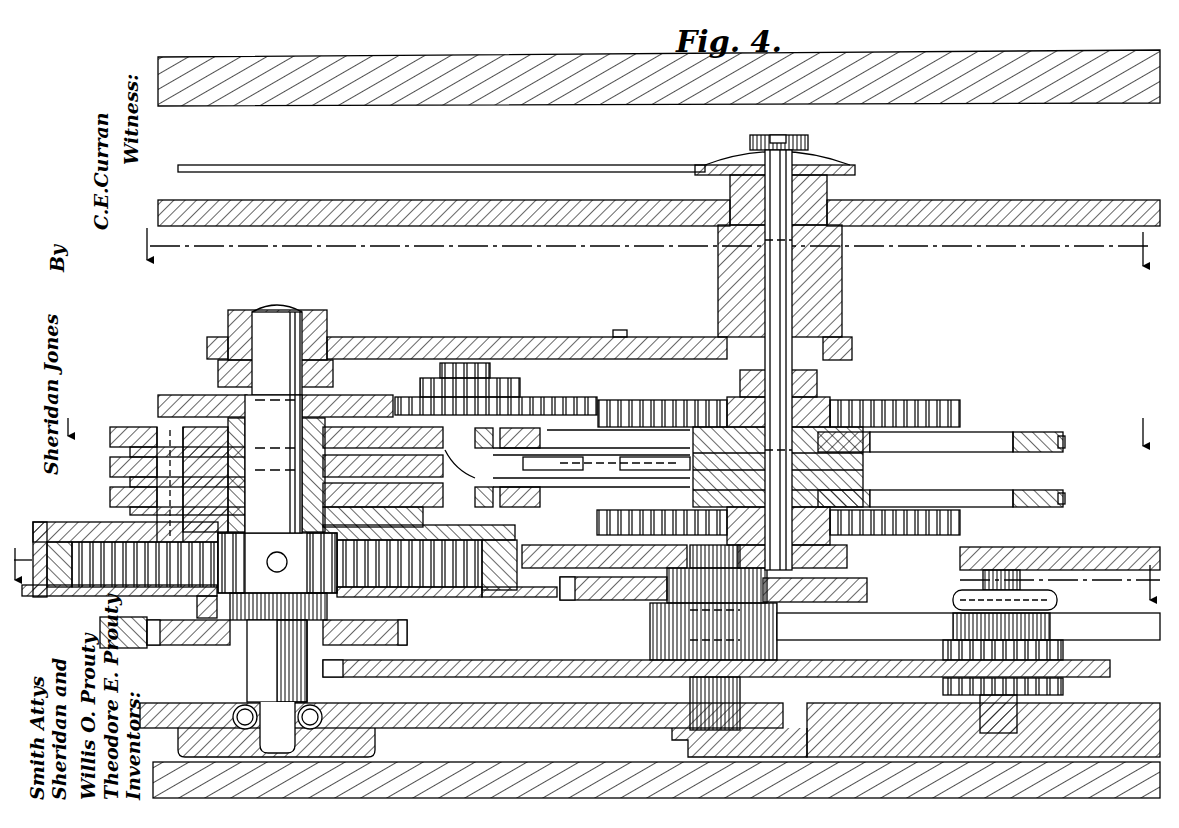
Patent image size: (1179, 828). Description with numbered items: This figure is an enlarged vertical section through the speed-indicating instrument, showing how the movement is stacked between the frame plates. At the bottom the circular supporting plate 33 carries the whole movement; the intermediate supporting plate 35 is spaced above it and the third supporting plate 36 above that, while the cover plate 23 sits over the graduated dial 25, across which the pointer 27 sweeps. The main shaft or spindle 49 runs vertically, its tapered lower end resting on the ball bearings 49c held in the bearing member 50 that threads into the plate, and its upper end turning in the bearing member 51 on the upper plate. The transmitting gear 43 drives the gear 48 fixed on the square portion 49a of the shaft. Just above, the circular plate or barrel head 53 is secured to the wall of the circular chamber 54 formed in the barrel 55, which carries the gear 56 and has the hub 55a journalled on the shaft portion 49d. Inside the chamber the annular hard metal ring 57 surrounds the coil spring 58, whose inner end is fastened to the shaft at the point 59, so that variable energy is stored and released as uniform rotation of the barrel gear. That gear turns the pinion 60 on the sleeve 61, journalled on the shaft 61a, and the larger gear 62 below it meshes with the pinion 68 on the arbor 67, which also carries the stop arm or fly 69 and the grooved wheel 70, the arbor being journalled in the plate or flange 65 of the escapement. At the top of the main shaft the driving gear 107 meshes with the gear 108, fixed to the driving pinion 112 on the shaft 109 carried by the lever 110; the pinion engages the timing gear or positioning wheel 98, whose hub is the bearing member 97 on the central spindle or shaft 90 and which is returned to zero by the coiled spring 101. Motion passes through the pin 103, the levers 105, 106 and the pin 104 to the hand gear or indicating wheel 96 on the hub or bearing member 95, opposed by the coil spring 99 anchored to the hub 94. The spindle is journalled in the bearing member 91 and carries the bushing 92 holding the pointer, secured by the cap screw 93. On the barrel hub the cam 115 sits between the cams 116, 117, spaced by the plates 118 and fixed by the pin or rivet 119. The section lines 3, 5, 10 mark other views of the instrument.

The cover plate 23 is at (1040, 100).
The pointer 27 is at (612, 165).
The graduated dial 25 is at (945, 212).
The section line 3 is at (648, 248).
The cap screw 93 is at (808, 146).
The bushing 92 is at (828, 189).
The bearing member 91 is at (842, 312).
The third supporting plate 36 is at (486, 338).
The bearing member 51 is at (327, 318).
The hub 55a is at (160, 401).
The driving gear 107 is at (185, 397).
The portion of the shaft 49d is at (263, 425).
The section line 10 is at (606, 421).
The cam 116 is at (110, 436).
The plates 118 is at (130, 452).
The cam 115 is at (110, 466).
The cam 117 is at (110, 494).
The pin or rivet 119 is at (130, 512).
The barrel 55 is at (490, 535).
The pin 103 is at (560, 470).
The pin 104 is at (628, 468).
The shaft 109 is at (480, 373).
The lever 110 is at (481, 486).
The driving pinion 112 is at (412, 397).
The gear 108 is at (546, 400).
The annular hard metal ring 57 is at (48, 588).
The coil spring 58 is at (112, 572).
The section line 5 is at (587, 569).
The point of attachment 59 is at (267, 564).
The main shaft or spindle 49 is at (300, 306).
The square portion 49a is at (256, 645).
The gear 48 is at (406, 626).
The transmitting gear 43 is at (133, 648).
The circular plate or barrel head 53 is at (448, 597).
The circular chamber 54 is at (492, 600).
The gear 56 is at (536, 572).
The pinion 60 is at (612, 600).
The gear 62 is at (612, 666).
The sleeve 61 is at (690, 690).
The stop arm or fly 69 is at (870, 620).
The pinion 68 is at (1064, 650).
The bearing member 50 is at (360, 706).
The ball bearings 49c is at (338, 698).
The shaft 61a is at (736, 730).
The circular supporting plate 33 is at (476, 739).
The bearing member 97 is at (800, 392).
The coiled spring 101 is at (906, 404).
The hub or bearing member 95 is at (864, 478).
The lever 105 is at (852, 459).
The lever 106 is at (852, 473).
The timing gear or positioning wheel 98 is at (1046, 436).
The hand gear or indicating wheel 96 is at (1030, 493).
The coil spring 99 is at (958, 531).
The hub 94 is at (847, 566).
The intermediate supporting plate 35 is at (822, 558).
The plate or flange 65 is at (1076, 550).
The arbor 67 is at (983, 580).
The grooved wheel 70 is at (953, 603).
The spindle or shaft 90 is at (788, 294).